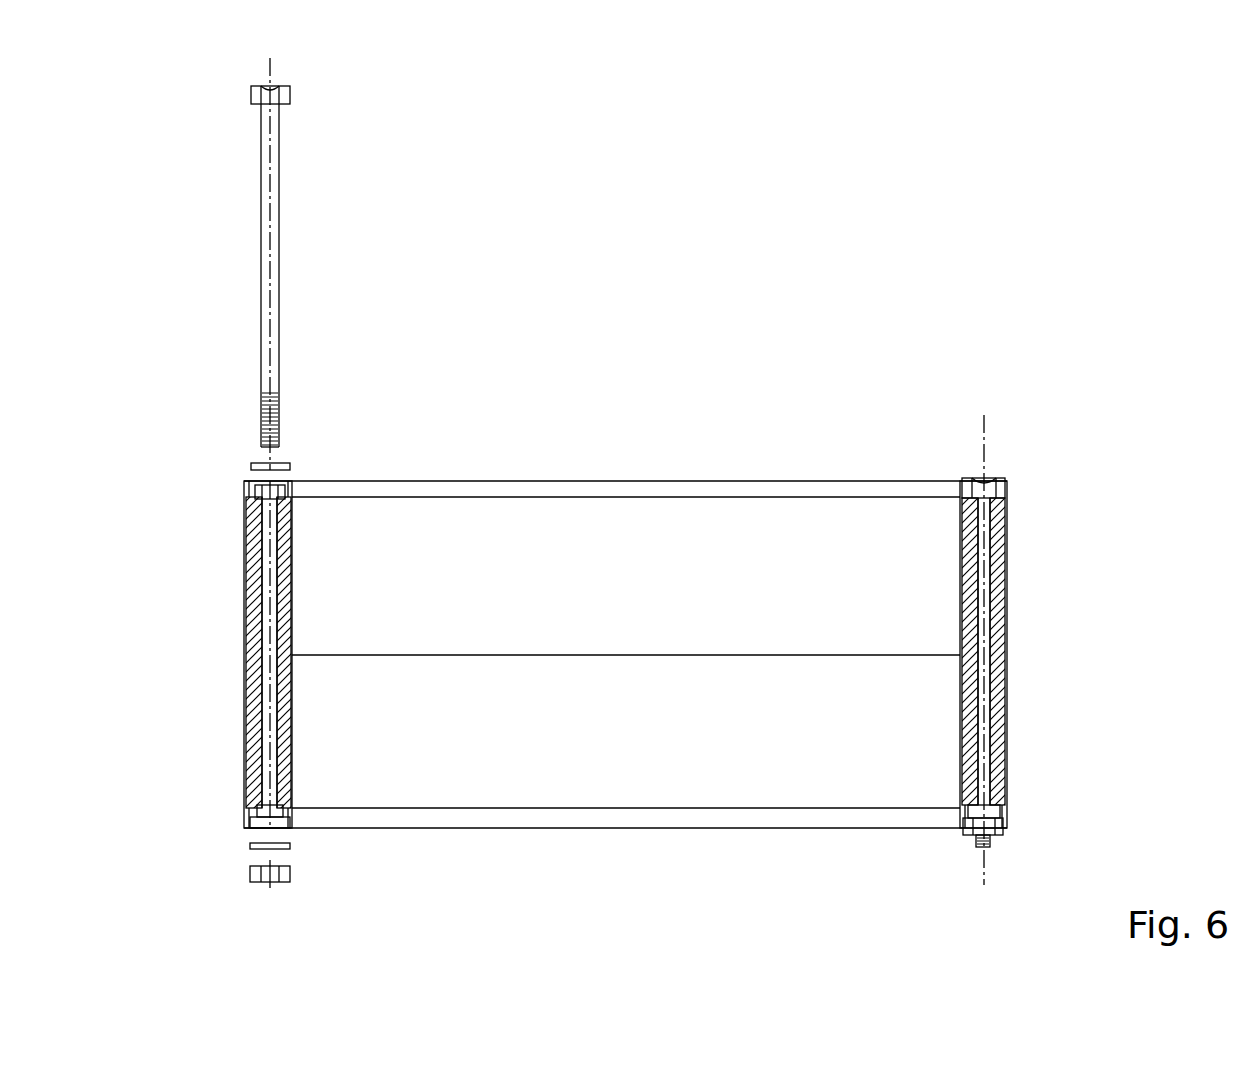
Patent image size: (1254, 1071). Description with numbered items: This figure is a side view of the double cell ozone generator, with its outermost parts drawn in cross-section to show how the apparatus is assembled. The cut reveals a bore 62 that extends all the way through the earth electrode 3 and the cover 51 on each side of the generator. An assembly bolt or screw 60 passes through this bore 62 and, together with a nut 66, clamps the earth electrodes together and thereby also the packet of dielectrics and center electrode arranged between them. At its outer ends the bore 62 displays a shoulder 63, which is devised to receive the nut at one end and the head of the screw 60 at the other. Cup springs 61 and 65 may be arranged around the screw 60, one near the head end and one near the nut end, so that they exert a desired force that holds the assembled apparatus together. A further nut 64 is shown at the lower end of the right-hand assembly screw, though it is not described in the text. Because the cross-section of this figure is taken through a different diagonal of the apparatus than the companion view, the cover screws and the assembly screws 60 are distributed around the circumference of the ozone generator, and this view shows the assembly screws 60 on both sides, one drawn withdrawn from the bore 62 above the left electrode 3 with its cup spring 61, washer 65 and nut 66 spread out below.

The earth electrode 3 is at (246, 528).
The cover 51 is at (438, 488).
The assembly bolt or screw 60 is at (291, 97).
The cup spring 61 is at (292, 466).
The bore 62 is at (270, 598).
The shoulder 63 is at (253, 481).
The nut 64 is at (1003, 835).
The cup spring 65 is at (250, 846).
The nut 66 is at (291, 873).